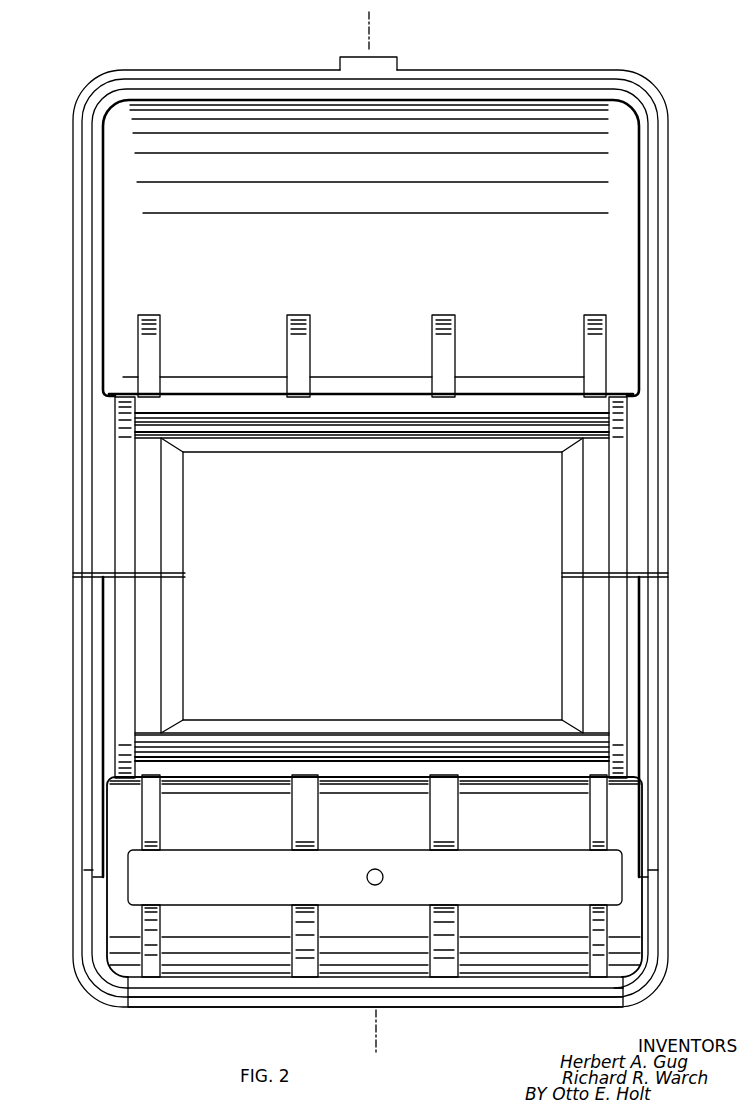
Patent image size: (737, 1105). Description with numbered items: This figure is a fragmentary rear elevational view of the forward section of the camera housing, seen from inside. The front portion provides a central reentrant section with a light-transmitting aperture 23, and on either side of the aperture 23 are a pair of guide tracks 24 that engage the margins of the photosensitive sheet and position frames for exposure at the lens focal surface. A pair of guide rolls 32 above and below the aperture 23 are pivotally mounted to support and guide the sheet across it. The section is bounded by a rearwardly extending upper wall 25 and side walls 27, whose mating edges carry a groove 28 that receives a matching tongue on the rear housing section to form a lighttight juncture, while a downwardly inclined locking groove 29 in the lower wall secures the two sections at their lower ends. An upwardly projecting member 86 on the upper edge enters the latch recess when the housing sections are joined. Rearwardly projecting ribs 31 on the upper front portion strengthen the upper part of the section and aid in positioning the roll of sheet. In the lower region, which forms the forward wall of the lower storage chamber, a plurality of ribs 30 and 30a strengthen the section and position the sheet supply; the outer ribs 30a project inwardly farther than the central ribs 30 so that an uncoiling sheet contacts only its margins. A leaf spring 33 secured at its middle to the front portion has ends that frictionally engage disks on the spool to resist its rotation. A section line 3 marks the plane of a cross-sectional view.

The section line 3- 3 is at (369, 15).
The light-transmitting aperture 23 is at (175, 553).
The guide tracks 24 is at (147, 522).
The upper wall 25 is at (231, 70).
The side walls 27 is at (75, 322).
The groove 28 is at (90, 278).
The locking groove 29 is at (305, 992).
The ribs 30 is at (430, 815).
The outer ribs 30a is at (160, 823).
The rearwardly projecting ribs 31 is at (160, 352).
The guide rolls 32 is at (355, 422).
The leaf spring 33 is at (503, 880).
The upwardly projecting member 86 is at (396, 64).